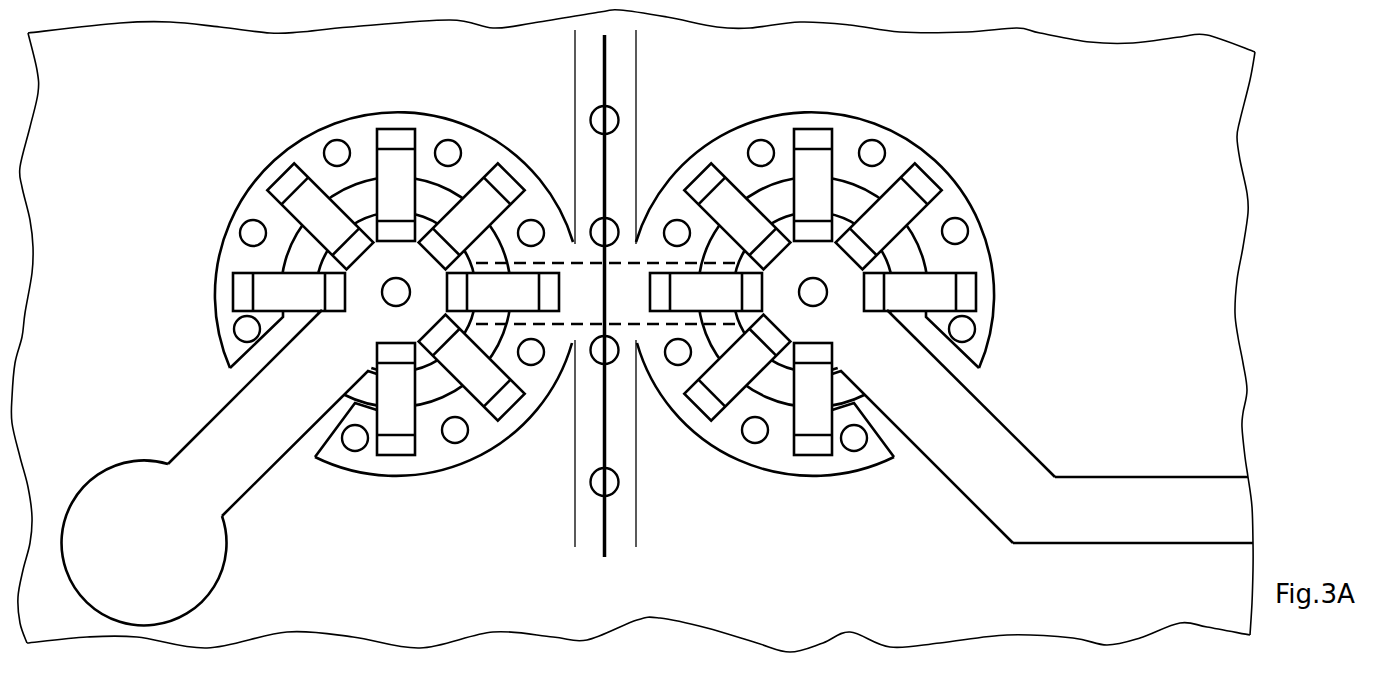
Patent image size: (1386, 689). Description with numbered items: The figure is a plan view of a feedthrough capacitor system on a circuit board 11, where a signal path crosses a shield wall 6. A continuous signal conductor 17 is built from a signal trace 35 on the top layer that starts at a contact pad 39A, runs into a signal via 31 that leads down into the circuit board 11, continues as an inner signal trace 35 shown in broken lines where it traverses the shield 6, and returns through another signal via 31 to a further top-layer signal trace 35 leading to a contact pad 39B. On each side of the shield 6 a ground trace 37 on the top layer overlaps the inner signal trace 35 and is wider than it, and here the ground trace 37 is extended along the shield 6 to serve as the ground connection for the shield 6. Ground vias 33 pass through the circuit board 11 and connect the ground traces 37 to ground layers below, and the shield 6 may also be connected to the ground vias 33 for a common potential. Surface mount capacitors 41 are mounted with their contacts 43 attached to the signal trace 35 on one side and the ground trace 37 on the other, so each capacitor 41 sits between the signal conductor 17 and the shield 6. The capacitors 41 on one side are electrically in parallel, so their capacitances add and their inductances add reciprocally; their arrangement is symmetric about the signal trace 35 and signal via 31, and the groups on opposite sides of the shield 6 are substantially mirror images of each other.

The shield wall 6 is at (600, 62).
The circuit board 11 is at (1233, 395).
The signal conductor 17 is at (656, 518).
The signal via 31 is at (399, 289).
The ground via 33 is at (336, 152).
The signal trace 35 is at (207, 442).
The ground trace 37 is at (427, 457).
The contact pad 39A is at (112, 508).
The contact pad 39B is at (1138, 493).
The surface mount capacitor 41 is at (388, 142).
The contact 43 is at (363, 237).